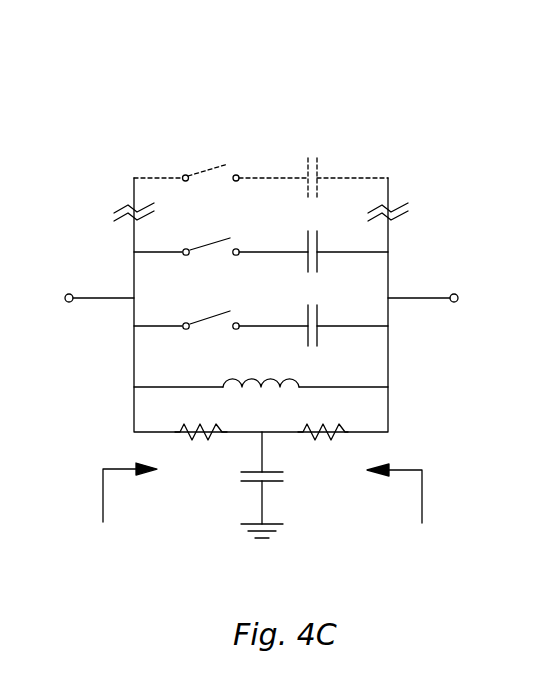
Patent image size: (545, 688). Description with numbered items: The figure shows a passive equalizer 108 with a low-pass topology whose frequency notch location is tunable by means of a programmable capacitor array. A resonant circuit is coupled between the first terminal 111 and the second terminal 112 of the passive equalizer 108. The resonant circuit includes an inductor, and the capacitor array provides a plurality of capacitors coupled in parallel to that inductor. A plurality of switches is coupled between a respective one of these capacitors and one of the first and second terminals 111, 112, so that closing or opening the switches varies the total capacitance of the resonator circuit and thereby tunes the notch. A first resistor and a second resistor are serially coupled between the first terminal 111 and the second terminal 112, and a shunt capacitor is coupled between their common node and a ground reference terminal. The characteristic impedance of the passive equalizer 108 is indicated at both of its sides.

The passive equalizer 108 is at (267, 88).
The first terminal 111 is at (69, 294).
The second terminal 112 is at (459, 294).